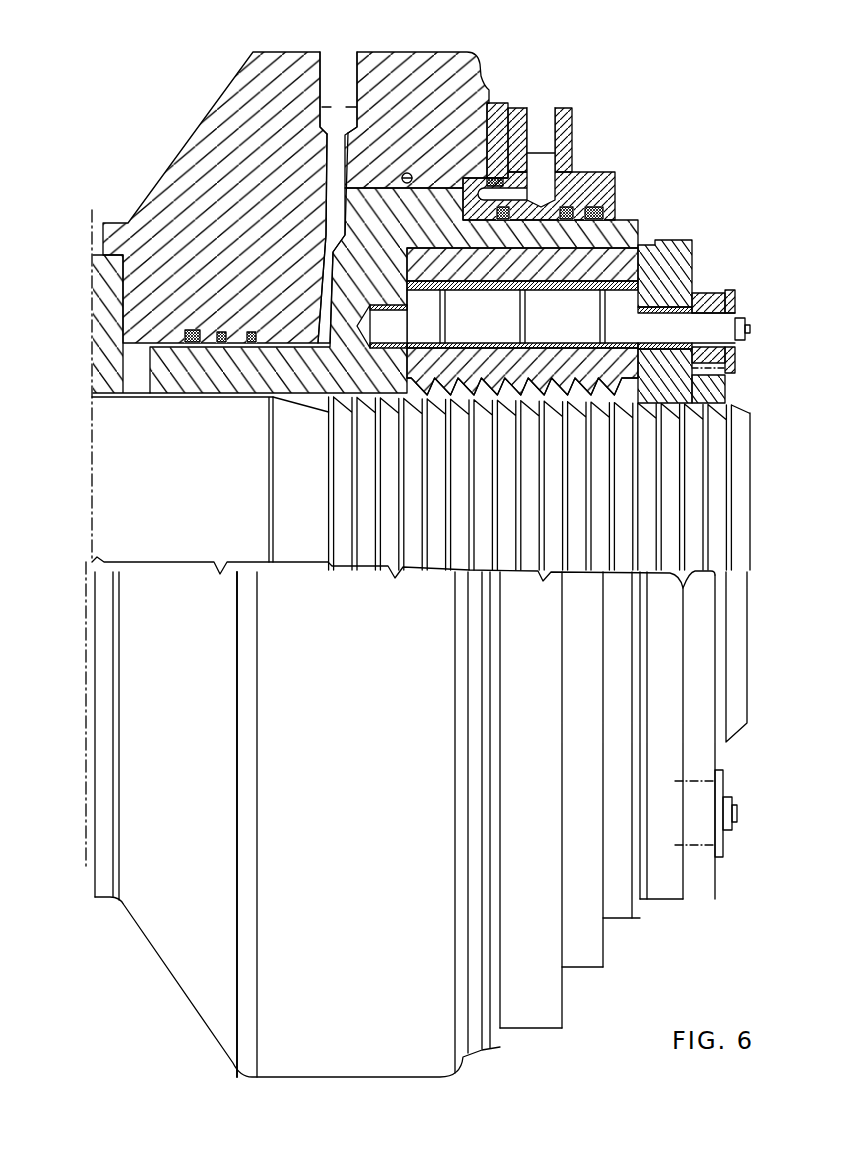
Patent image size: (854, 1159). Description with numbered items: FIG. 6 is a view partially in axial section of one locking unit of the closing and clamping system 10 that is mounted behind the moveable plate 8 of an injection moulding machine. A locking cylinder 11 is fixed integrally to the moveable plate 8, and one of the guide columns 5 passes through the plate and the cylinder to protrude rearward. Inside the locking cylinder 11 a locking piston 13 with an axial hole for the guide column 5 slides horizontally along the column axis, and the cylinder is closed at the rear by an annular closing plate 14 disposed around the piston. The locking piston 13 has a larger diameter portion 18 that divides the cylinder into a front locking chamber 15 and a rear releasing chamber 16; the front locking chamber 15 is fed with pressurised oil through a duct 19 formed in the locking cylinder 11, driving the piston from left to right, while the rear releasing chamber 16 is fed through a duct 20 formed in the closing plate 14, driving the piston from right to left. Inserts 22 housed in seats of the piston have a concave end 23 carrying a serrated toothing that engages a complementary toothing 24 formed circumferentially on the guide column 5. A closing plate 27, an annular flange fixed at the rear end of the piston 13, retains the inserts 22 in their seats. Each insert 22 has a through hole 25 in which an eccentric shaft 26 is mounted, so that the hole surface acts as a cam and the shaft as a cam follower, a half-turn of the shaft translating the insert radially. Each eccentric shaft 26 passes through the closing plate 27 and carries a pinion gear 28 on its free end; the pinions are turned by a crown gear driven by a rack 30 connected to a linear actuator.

The guide column 5 is at (166, 528).
The moveable plate 8 is at (112, 292).
The closing and clamping system 10 is at (439, 546).
The locking cylinder 11 is at (442, 83).
The locking piston 13 is at (213, 358).
The annular closing plate 14 is at (572, 137).
The front locking chamber 15 is at (313, 290).
The rear releasing chamber 16 is at (487, 167).
The larger diameter portion of the locking piston 18 is at (390, 207).
The duct 19 is at (333, 153).
The duct 20 is at (543, 137).
The insert 22 is at (572, 373).
The concave end 23 is at (553, 388).
The complementary toothing 24 is at (440, 398).
The through hole 25 is at (613, 173).
The eccentric shaft 26 is at (690, 250).
The closing plate 27 is at (667, 330).
The pinion gear 28 is at (710, 307).
The rack 30 is at (723, 383).